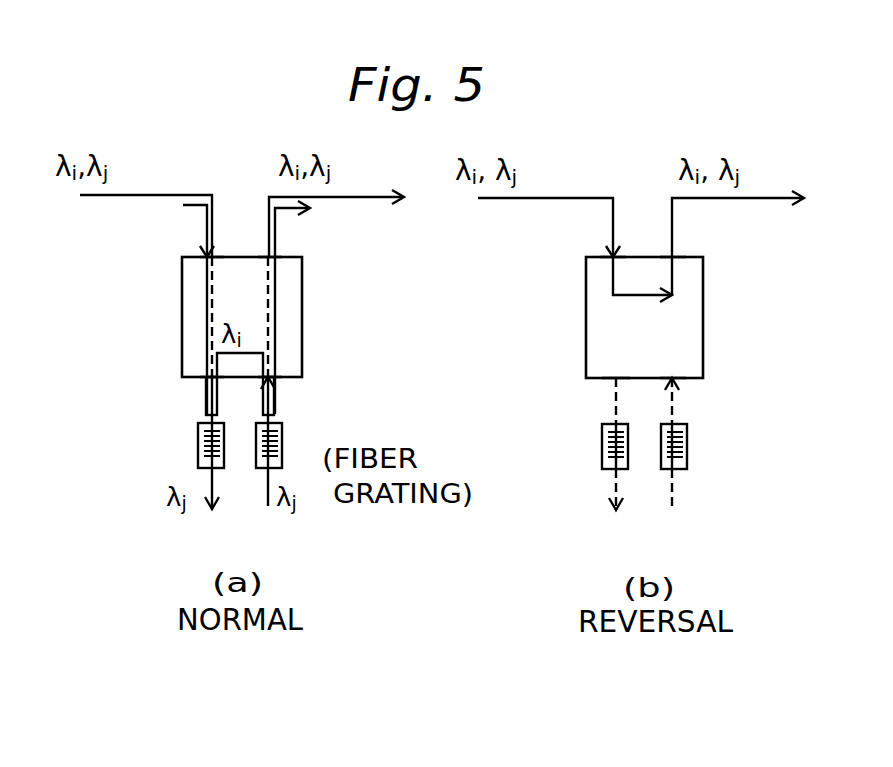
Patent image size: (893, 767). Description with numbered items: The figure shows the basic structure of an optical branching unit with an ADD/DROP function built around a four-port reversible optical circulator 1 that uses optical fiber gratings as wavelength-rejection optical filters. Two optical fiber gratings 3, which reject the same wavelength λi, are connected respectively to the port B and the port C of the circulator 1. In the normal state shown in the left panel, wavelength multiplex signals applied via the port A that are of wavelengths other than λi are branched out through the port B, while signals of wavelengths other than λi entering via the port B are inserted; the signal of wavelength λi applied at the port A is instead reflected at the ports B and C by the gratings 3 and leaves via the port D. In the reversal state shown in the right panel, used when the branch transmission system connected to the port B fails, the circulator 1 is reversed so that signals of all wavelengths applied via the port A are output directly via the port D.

The four-port reversible optical circulator 1 is at (190, 318).
The optical fiber grating 3 is at (198, 440).
The port A is at (394, 241).
The port B is at (393, 381).
The port C is at (497, 380).
The port D is at (494, 241).